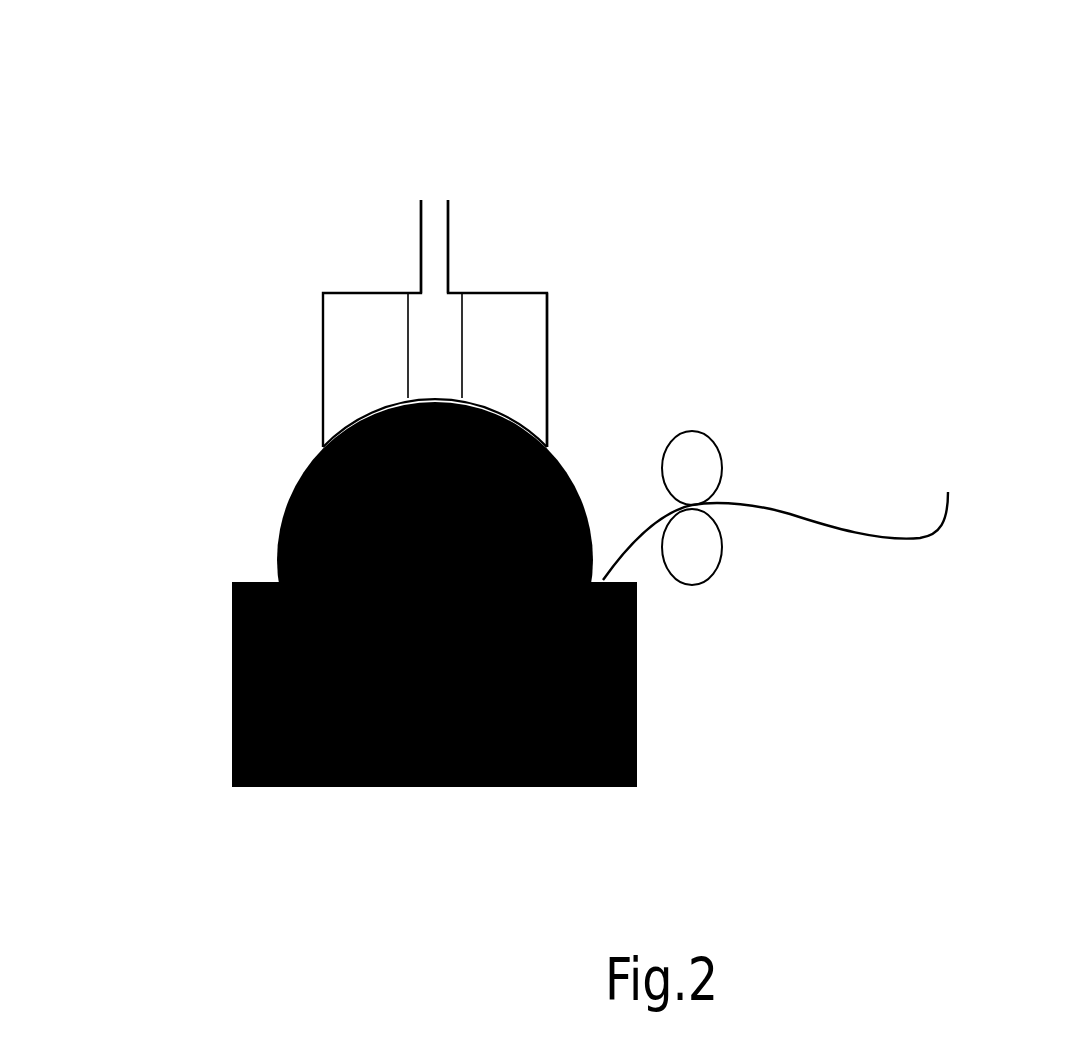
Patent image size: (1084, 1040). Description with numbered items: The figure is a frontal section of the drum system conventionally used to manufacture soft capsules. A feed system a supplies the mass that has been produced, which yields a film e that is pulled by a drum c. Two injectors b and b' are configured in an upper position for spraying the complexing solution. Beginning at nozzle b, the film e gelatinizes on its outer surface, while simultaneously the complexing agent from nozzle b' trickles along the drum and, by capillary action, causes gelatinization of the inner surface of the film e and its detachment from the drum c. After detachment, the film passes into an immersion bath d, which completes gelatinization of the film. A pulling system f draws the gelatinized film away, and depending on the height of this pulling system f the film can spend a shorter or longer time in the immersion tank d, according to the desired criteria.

The feed system a is at (433, 266).
The injector b is at (344, 323).
The injector b' is at (676, 370).
The drum c is at (282, 567).
The immersion bath d is at (236, 705).
The film e is at (280, 491).
The pulling system f is at (693, 586).